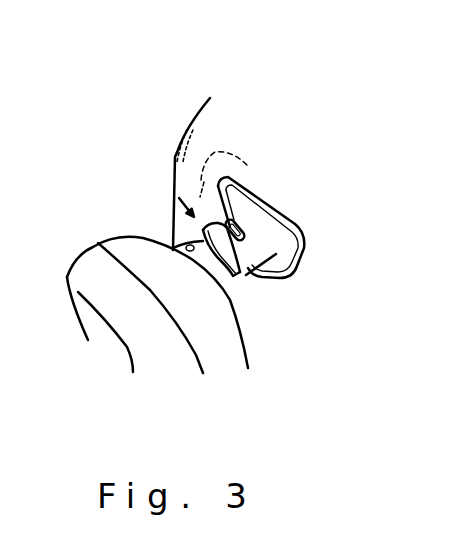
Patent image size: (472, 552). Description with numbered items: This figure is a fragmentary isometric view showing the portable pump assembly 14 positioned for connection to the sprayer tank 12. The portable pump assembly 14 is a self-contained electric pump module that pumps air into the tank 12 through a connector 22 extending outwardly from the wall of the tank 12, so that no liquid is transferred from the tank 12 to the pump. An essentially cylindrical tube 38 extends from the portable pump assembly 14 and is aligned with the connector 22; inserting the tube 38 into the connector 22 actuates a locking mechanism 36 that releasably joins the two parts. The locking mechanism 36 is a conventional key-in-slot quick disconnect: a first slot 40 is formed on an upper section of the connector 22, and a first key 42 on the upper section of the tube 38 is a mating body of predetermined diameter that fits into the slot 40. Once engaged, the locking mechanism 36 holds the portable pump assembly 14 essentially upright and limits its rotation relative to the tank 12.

The tank 12 is at (217, 128).
The portable pump assembly 14 is at (220, 332).
The connector 22 is at (262, 225).
The locking mechanism 36 is at (174, 202).
The tube 38 is at (203, 241).
The first slot 40 is at (233, 219).
The first key 42 is at (195, 257).